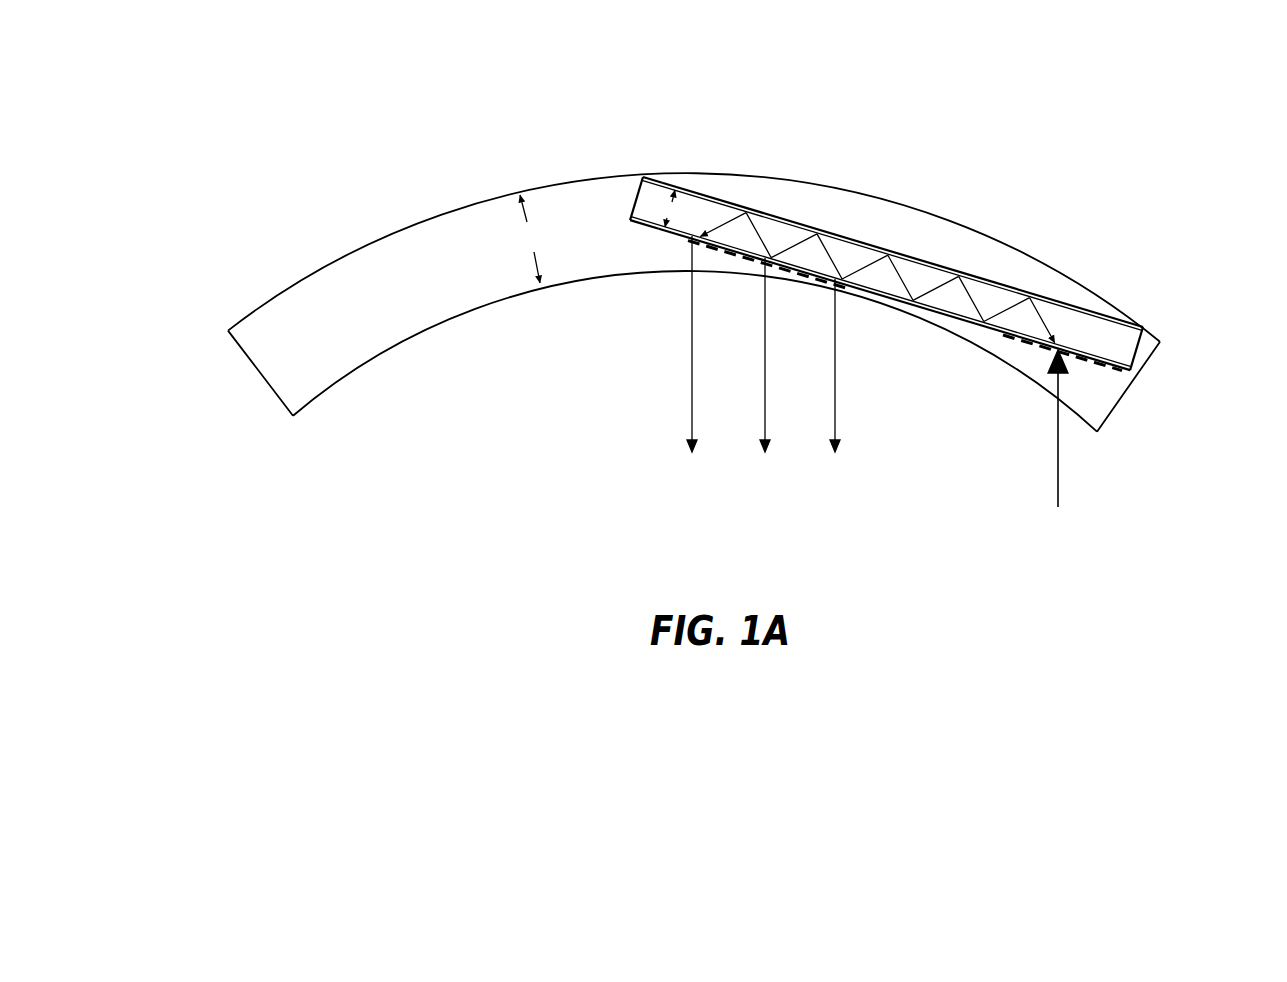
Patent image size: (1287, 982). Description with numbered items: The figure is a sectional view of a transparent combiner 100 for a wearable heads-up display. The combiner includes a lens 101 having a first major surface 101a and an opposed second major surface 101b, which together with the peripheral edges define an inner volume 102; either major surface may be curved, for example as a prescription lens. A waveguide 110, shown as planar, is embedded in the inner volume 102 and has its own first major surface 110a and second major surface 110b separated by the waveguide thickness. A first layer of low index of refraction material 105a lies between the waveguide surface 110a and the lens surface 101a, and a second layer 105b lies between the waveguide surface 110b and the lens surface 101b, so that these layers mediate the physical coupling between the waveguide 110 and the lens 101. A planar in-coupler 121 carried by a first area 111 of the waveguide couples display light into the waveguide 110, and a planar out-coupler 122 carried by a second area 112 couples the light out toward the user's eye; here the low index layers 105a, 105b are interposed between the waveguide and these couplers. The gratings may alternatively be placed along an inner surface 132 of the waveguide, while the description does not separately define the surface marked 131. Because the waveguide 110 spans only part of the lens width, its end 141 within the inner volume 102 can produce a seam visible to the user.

The transparent combiner 100 is at (236, 117).
The lens 101 is at (663, 272).
The first major surface of the lens 101a is at (827, 181).
The second major surface of the lens 101b is at (497, 302).
The inner volume of the lens 102 is at (500, 266).
The first layer of low index of refraction material 105a is at (1027, 292).
The second layer of low index of refraction material 105b is at (997, 336).
The waveguide 110 is at (859, 308).
The first major surface of the waveguide 110a is at (849, 236).
The second major surface of the waveguide 110b is at (893, 302).
The first area of the waveguide 111 is at (1101, 368).
The second area of the waveguide 112 is at (735, 255).
The planar in-coupler 121 is at (1080, 353).
The planar out-coupler 122 is at (723, 248).
The lower edge of waveguide end 131 is at (656, 228).
The inner surface of the waveguide 132 is at (645, 175).
The end of the planar waveguide 141 is at (636, 199).